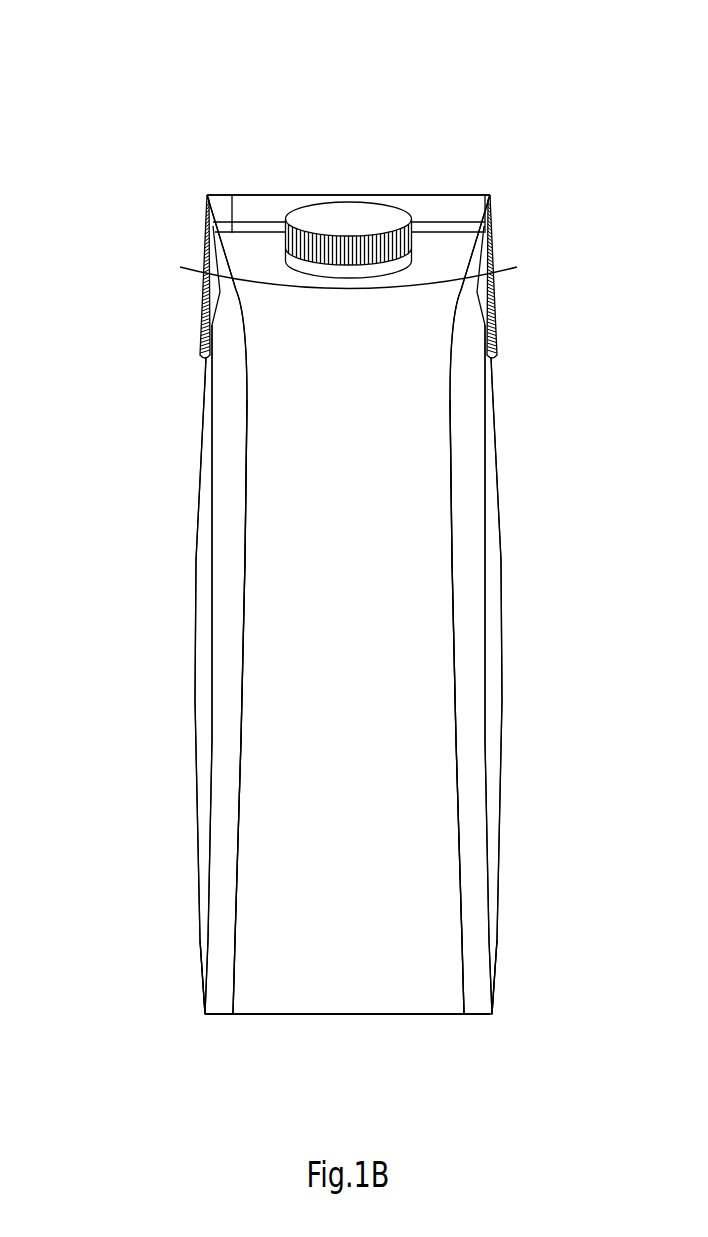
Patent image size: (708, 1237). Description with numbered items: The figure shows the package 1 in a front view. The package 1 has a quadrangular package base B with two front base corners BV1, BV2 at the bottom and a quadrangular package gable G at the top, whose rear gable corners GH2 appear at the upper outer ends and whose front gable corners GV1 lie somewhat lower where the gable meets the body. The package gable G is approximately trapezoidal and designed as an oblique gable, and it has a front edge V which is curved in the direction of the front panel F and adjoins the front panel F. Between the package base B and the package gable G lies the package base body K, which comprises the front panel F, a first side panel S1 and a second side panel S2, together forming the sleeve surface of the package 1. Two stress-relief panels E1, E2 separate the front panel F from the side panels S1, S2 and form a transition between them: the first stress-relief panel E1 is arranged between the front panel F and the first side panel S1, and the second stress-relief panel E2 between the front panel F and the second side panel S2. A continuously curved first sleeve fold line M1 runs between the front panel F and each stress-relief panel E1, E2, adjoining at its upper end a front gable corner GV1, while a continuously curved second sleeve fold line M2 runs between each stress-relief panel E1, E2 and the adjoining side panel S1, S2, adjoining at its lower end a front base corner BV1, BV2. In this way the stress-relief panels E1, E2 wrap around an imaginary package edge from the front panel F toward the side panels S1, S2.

The package 1 is at (588, 166).
The package gable G is at (443, 212).
The rear gable corner GH2 is at (206, 192).
The front gable corner GV1 is at (180, 267).
The front edge V is at (350, 289).
The first sleeve fold line M1 is at (247, 500).
The second sleeve fold line M2 is at (197, 541).
The first stress-relief panel E1 is at (227, 620).
The second stress-relief panel E2 is at (470, 620).
The first side panel S1 is at (203, 697).
The second side panel S2 is at (495, 697).
The front panel F is at (357, 658).
The package base body K is at (98, 581).
The package base B is at (337, 1037).
The front base corner BV1 is at (491, 1016).
The front base corner BV2 is at (205, 1016).